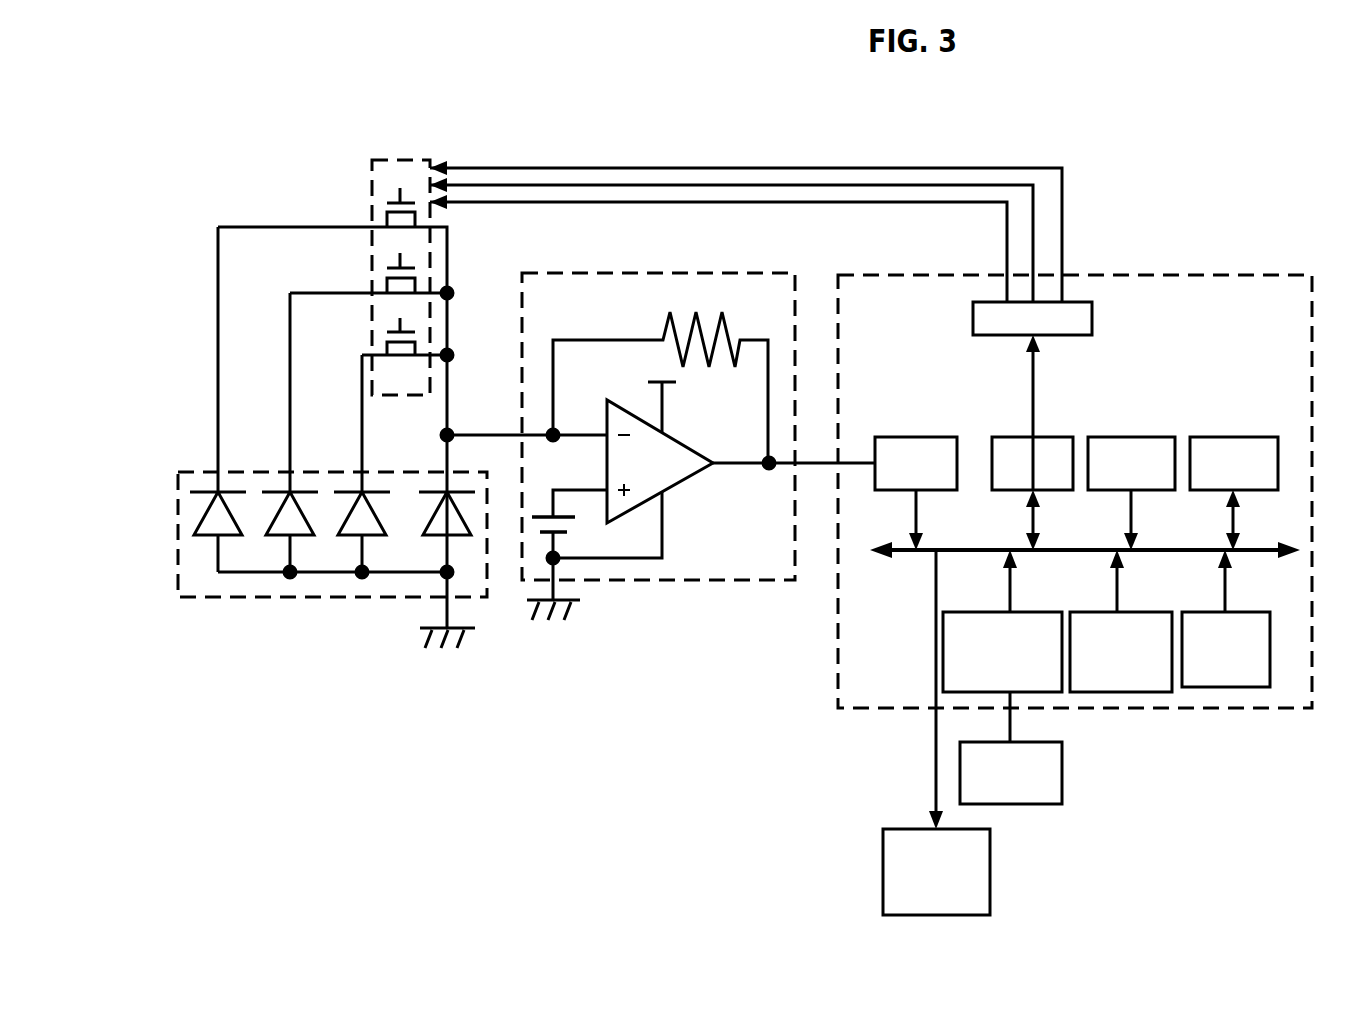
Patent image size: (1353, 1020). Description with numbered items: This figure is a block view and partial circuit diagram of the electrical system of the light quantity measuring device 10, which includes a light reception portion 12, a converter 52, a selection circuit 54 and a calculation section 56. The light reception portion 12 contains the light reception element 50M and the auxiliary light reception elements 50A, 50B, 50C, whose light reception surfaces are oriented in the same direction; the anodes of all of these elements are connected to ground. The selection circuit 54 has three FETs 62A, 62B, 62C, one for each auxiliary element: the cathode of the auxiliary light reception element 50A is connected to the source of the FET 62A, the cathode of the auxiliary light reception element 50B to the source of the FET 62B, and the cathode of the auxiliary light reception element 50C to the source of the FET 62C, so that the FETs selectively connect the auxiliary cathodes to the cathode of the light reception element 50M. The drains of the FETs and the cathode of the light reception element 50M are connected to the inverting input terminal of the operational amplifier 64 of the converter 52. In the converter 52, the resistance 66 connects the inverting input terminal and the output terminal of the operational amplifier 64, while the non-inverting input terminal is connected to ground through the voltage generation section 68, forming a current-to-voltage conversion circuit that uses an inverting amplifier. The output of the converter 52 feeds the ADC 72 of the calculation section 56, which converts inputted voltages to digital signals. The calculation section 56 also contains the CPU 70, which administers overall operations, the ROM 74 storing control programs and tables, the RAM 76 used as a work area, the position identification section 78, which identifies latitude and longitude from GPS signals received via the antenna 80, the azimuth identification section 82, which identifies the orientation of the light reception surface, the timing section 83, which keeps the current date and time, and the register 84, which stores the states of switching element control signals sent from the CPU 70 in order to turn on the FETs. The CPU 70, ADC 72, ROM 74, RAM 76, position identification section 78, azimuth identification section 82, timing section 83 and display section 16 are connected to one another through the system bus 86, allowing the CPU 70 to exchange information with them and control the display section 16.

The light quantity measuring device 10 is at (763, 112).
The light reception portion 12 is at (263, 470).
The display section 16 is at (990, 855).
The auxiliary light reception element 50A is at (233, 540).
The auxiliary light reception element 50B is at (303, 540).
The auxiliary light reception element 50C is at (375, 540).
The light reception element 50M is at (432, 510).
The converter 52 is at (742, 585).
The selection circuit 54 is at (385, 148).
The calculation section 56 is at (1192, 272).
The FET 62A is at (386, 194).
The FET 62B is at (386, 263).
The FET 62C is at (386, 323).
The operational amplifier 64 is at (683, 441).
The resistance 66 is at (733, 312).
The voltage generation section 68 is at (577, 530).
The CPU 70 is at (1048, 436).
The ADC 72 is at (932, 436).
The ROM 74 is at (1147, 436).
The RAM 76 is at (1253, 436).
The position identification section 78 is at (1035, 611).
The antenna 80 is at (1062, 771).
The azimuth identification section 82 is at (1145, 611).
The timing section 83 is at (1240, 688).
The register 84 is at (1092, 320).
The system bus 86 is at (1272, 556).